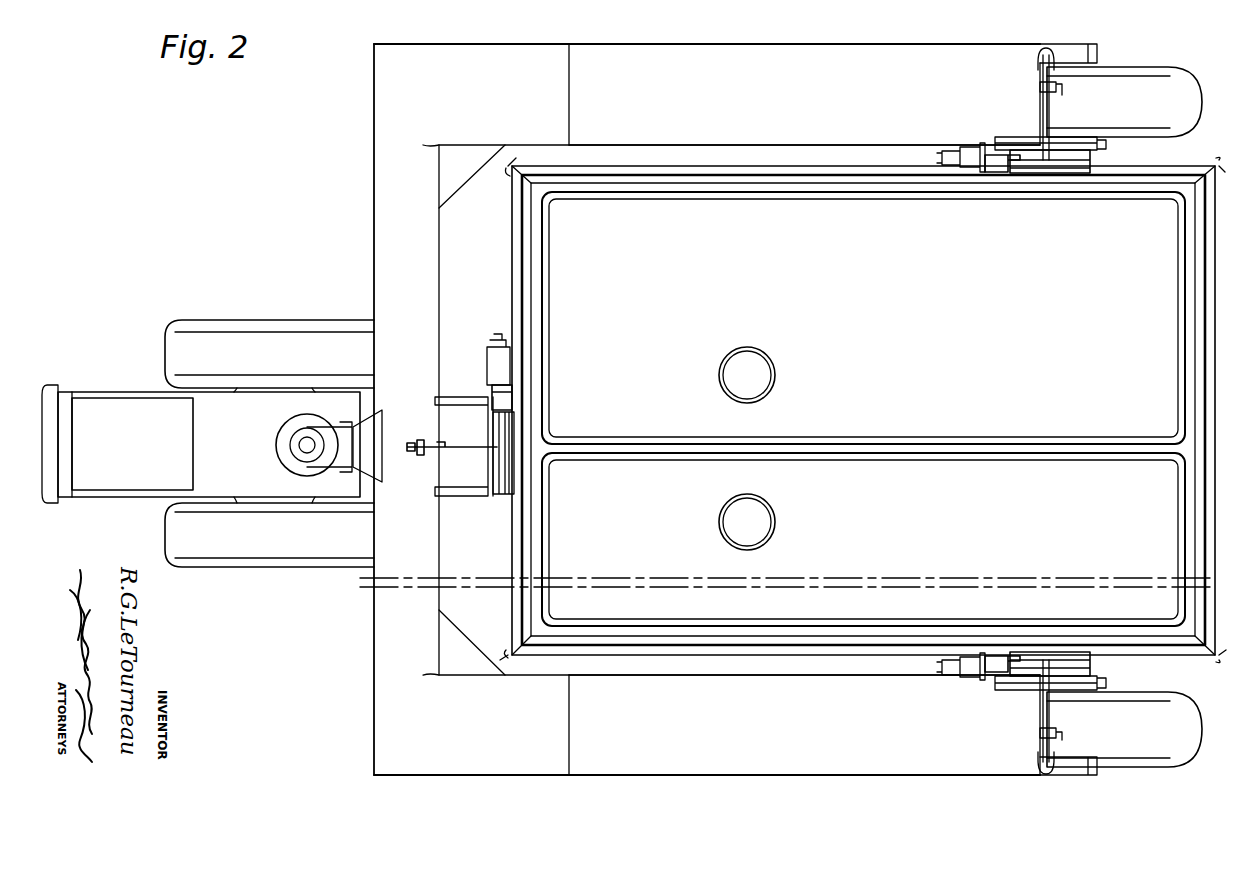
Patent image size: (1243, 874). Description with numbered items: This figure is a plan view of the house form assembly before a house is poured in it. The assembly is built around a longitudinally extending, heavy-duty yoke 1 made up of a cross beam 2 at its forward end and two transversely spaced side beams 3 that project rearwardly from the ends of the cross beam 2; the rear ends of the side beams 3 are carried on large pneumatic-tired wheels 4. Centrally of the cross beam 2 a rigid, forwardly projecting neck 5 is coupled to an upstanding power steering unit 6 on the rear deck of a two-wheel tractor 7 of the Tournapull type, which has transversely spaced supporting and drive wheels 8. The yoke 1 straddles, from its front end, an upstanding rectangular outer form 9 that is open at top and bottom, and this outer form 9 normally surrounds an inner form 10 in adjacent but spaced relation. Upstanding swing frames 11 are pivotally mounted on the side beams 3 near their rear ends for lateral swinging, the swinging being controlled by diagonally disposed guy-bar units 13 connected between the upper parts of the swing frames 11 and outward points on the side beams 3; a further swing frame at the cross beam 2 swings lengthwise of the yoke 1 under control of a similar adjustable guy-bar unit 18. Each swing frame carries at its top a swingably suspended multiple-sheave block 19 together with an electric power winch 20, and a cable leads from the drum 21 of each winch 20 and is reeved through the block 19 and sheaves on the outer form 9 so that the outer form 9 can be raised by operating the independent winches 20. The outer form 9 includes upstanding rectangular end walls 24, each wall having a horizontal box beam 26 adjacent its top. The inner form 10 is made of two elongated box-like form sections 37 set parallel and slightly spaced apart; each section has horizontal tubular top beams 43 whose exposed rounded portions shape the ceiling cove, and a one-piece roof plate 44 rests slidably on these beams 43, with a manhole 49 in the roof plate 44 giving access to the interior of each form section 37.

The yoke 1 is at (372, 639).
The cross beam 2 is at (373, 245).
The side beams 3 is at (840, 72).
The pneumatic-tired wheels 4 is at (1130, 85).
The neck 5 is at (372, 410).
The power steering unit 6 is at (300, 447).
The two-wheel tractor 7 is at (105, 410).
The supporting and drive wheels 8 is at (275, 553).
The outer form 9 is at (686, 660).
The inner form 10 is at (536, 414).
The swing frames 11 is at (1097, 157).
The guy-bar units 13 is at (1038, 103).
The guy-bar unit 18 is at (455, 445).
The multiple-sheave block 19 is at (1052, 180).
The electric power winch 20 is at (968, 148).
The drum 21 is at (1000, 176).
The end walls 24 is at (541, 537).
The box beam 26 is at (833, 170).
The form sections 37 is at (706, 190).
The tubular beam 43 is at (872, 200).
The roof plate 44 is at (608, 215).
The manhole 49 is at (742, 505).